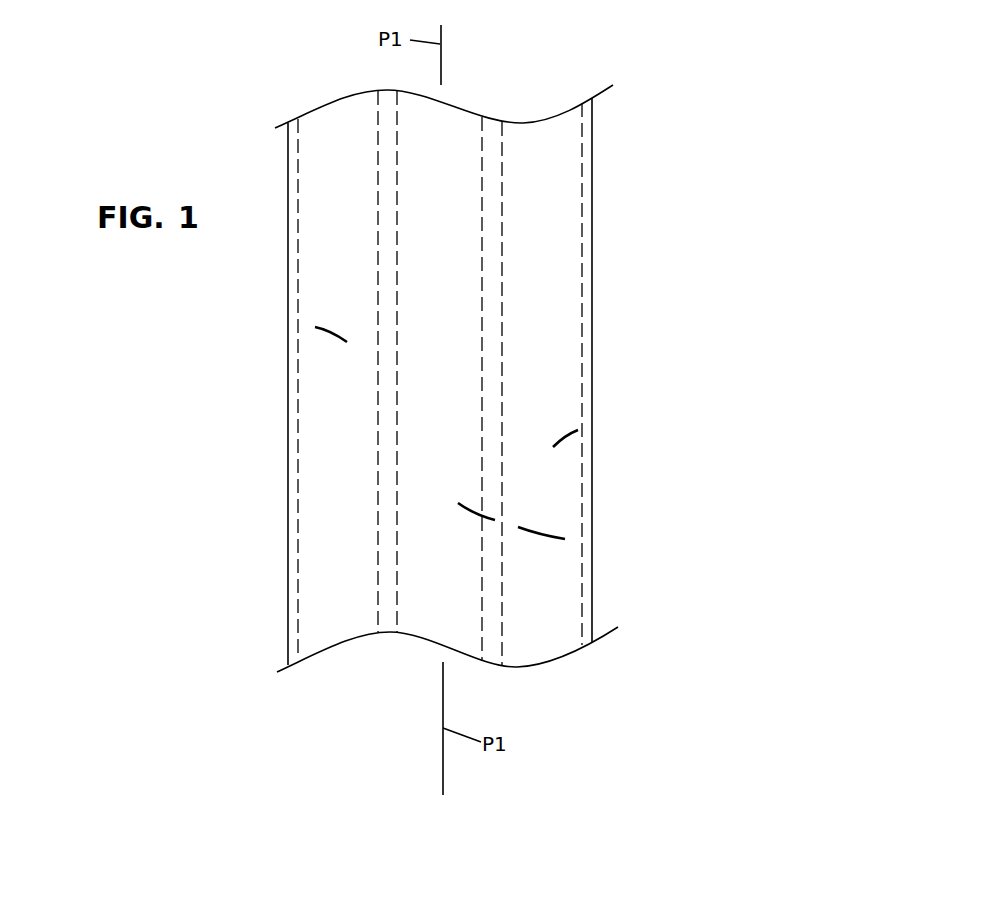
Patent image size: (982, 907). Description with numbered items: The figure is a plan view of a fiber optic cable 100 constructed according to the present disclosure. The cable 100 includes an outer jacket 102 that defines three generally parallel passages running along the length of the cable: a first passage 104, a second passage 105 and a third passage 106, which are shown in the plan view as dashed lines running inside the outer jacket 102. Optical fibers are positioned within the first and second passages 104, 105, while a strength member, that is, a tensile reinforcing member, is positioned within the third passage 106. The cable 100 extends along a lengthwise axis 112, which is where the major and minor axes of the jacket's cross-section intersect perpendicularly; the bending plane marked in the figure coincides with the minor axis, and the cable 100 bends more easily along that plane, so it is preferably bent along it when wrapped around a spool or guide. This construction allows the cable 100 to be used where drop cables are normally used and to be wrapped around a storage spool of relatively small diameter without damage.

The fiber optic cable 100 is at (652, 142).
The outer jacket 102 is at (593, 302).
The first passage 104 is at (300, 320).
The second passage 105 is at (597, 423).
The third passage 106 is at (587, 543).
The lengthwise axis 112 is at (441, 70).